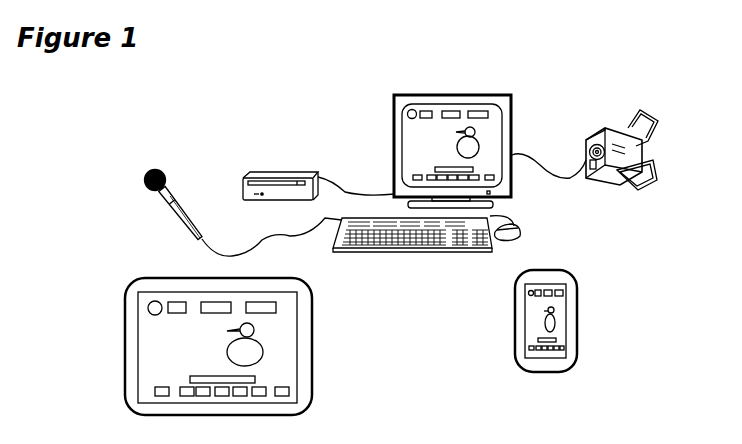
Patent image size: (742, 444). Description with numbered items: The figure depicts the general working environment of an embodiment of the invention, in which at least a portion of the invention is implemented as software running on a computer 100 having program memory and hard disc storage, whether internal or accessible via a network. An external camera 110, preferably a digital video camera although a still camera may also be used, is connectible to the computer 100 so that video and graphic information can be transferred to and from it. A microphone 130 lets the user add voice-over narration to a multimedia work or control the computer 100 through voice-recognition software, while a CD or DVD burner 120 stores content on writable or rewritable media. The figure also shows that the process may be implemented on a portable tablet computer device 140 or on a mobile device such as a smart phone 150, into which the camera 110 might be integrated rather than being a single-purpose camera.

The computer 100 is at (496, 94).
The camera 110 is at (643, 106).
The CD or DVD burner 120 is at (253, 178).
The microphone 130 is at (160, 166).
The portable tablet computer device 140 is at (313, 360).
The smart phone 150 is at (577, 348).